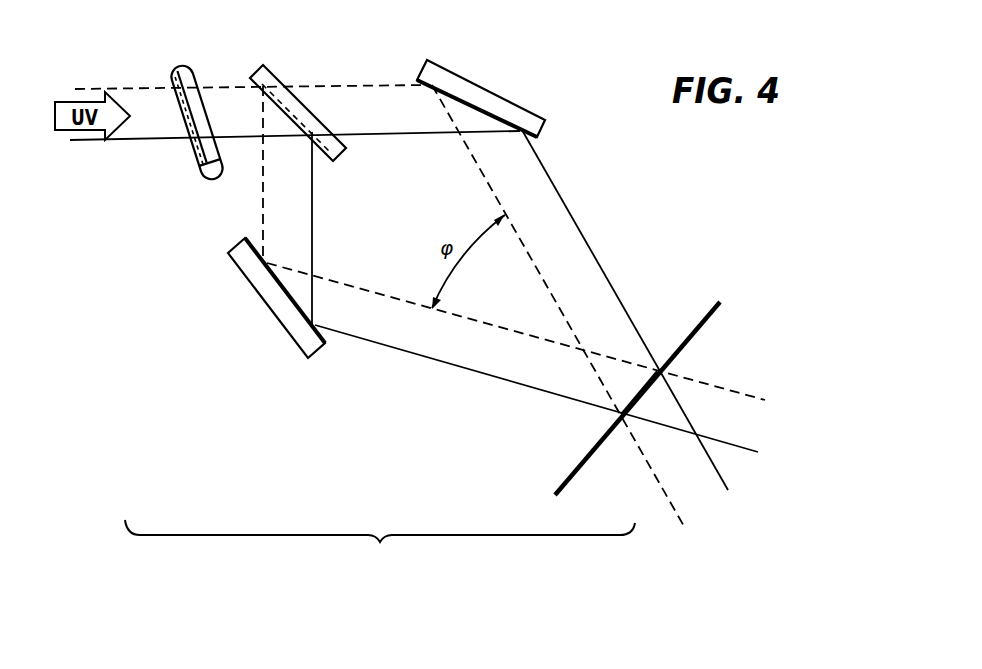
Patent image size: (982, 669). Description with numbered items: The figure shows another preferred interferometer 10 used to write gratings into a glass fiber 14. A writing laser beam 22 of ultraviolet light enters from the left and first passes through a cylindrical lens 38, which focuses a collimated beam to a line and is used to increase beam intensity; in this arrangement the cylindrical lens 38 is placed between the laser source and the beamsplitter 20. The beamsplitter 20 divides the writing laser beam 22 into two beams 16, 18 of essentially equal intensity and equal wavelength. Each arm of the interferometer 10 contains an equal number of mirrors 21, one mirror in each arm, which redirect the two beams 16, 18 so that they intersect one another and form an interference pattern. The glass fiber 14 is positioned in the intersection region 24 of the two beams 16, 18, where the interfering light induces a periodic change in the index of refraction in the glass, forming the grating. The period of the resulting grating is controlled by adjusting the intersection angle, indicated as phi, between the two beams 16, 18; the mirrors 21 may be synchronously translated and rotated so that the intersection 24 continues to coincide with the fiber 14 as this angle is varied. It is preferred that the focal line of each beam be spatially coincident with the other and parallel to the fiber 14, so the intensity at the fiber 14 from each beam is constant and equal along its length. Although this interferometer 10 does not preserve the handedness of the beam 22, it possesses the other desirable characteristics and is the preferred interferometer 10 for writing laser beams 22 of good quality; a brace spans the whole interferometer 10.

The interferometer 10 is at (380, 548).
The glass fiber 14 is at (696, 334).
The interfering laser beam 16 is at (580, 229).
The interfering laser beam 18 is at (390, 297).
The beamsplitter 20 is at (372, 158).
The mirrors 21 is at (439, 62).
The writing laser beam 22 is at (135, 88).
The intersection region 24 is at (658, 377).
The cylindrical lens 38 is at (197, 162).